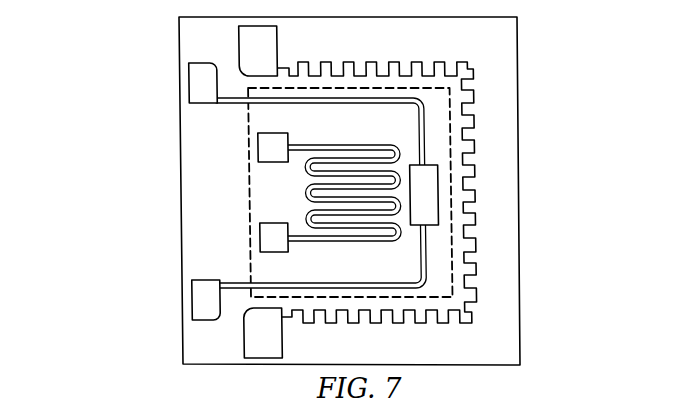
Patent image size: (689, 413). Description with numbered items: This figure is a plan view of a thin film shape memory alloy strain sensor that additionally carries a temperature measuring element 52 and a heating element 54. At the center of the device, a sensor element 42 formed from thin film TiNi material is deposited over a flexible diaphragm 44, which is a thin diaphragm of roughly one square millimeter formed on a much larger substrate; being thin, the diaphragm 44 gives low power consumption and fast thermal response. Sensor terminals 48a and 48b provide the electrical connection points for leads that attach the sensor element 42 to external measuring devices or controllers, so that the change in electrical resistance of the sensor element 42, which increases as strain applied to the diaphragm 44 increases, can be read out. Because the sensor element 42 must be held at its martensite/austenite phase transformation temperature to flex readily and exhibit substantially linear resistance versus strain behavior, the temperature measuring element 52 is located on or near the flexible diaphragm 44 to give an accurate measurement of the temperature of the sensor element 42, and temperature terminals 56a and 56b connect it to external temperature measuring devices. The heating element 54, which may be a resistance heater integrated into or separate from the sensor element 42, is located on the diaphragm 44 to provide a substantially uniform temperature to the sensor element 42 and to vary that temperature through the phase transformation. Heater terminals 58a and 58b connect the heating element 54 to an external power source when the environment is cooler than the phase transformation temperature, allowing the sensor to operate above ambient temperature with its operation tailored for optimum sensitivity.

The sensor element 42 is at (373, 145).
The flexible diaphragm 44 is at (413, 297).
The sensor terminal 48a is at (276, 155).
The sensor terminal 48b is at (274, 229).
The temperature measuring element 52 is at (418, 188).
The heating element 54 is at (473, 172).
The temperature terminal 56a is at (203, 82).
The temperature terminal 56b is at (205, 303).
The heater terminal 58a is at (262, 43).
The heater terminal 58b is at (267, 337).